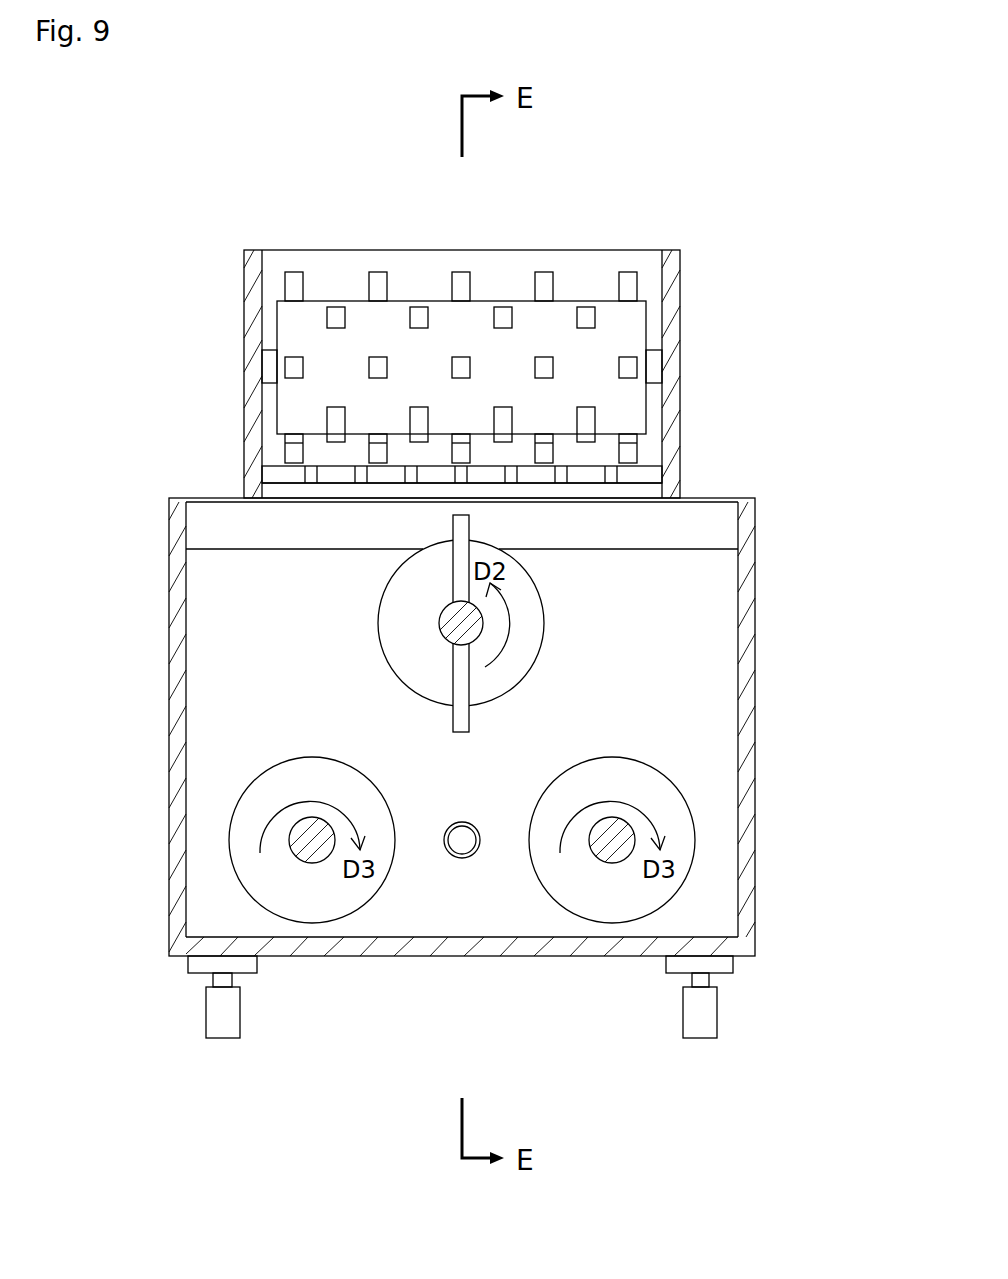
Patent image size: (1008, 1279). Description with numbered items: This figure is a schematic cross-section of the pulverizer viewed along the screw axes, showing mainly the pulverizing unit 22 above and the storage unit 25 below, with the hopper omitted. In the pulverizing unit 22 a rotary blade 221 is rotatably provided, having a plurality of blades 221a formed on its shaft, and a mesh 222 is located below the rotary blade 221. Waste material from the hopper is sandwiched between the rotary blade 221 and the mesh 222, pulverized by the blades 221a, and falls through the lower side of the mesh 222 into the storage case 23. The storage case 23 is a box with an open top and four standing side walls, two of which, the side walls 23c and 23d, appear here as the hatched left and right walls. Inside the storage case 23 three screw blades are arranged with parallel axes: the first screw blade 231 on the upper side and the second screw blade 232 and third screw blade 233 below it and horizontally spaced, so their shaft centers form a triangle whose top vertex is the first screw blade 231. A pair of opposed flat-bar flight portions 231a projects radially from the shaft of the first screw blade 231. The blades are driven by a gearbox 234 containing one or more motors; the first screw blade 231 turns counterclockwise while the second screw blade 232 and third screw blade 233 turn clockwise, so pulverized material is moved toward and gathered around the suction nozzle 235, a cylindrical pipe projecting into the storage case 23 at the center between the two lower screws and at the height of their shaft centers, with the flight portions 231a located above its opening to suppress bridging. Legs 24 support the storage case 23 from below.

The pulverizing unit 22 is at (234, 301).
The rotary blade 221 is at (578, 292).
The blades 221a is at (377, 280).
The mesh 222 is at (278, 475).
The storage case 23 is at (763, 495).
The side wall 23c is at (178, 672).
The side wall 23d is at (745, 672).
The gearbox 234 is at (694, 530).
The storage unit 25 is at (764, 537).
The first screw blade 231 is at (563, 606).
The flight portion 231a is at (462, 568).
The second screw blade 232 is at (228, 797).
The third screw blade 233 is at (696, 798).
The suction nozzle 235 is at (458, 858).
The leg 24 is at (707, 1015).